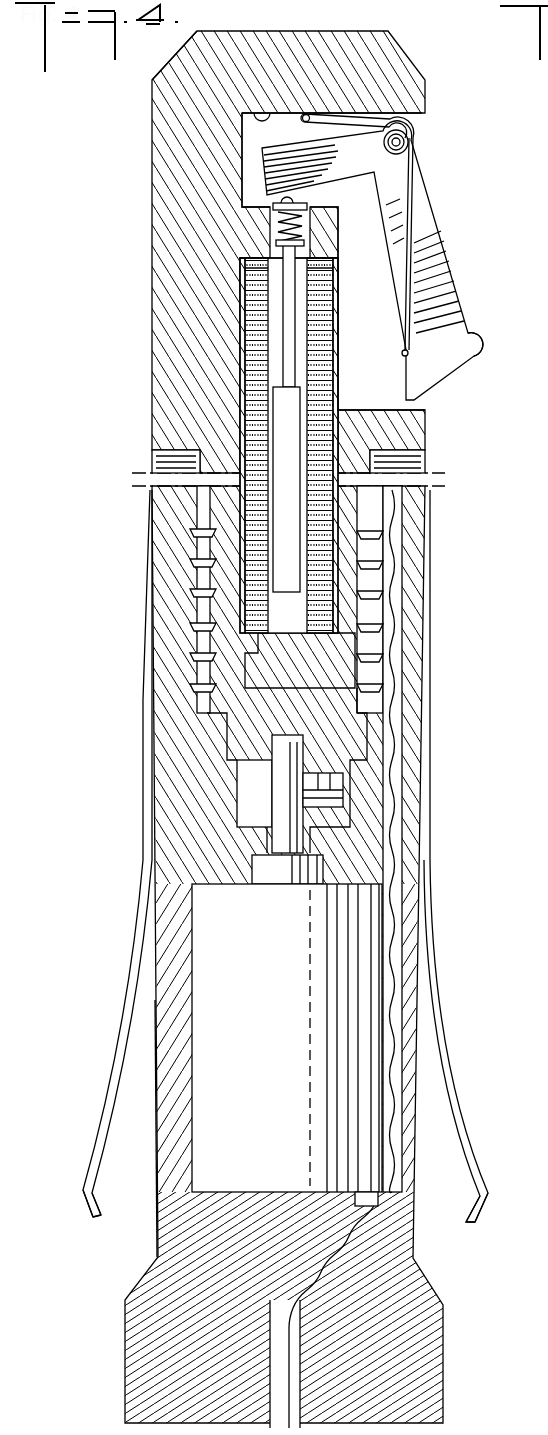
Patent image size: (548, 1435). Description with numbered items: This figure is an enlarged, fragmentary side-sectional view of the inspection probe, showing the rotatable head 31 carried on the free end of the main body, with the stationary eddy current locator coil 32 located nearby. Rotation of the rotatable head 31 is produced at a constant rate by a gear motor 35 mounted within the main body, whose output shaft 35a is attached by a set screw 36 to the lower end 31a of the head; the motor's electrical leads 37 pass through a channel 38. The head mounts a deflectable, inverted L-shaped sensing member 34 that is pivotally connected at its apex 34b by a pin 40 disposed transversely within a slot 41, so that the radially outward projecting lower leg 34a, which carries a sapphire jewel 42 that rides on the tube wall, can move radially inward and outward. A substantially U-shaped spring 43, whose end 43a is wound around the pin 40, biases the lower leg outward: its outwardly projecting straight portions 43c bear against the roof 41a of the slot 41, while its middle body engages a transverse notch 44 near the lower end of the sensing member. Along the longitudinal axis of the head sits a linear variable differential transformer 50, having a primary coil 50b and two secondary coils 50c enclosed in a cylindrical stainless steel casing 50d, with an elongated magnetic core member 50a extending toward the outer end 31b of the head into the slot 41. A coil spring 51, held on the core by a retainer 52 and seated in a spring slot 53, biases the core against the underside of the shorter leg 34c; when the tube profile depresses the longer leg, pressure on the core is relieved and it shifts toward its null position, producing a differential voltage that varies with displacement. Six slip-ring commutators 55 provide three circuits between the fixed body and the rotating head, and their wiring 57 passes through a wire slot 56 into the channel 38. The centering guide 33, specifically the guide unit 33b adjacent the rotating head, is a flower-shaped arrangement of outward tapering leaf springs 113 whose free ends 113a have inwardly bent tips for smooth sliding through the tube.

The rotatable head 31 is at (145, 405).
The lower end of the rotatable head 31a is at (338, 722).
The outer end of the rotatable head 31b is at (170, 60).
The eddy current locator coil 32 is at (153, 464).
The centering guide 33 is at (150, 1123).
The centering guide 33b is at (442, 968).
The sensing member 34 is at (474, 314).
The lower leg of the sensing member 34a is at (455, 323).
The apex of the sensing member 34b is at (432, 157).
The shorter leg of the sensing member 34c is at (265, 153).
The gear motor 35 is at (306, 981).
The output shaft 35a is at (277, 747).
The set screw 36 is at (328, 790).
The electrical leads 37 is at (328, 1245).
The channel 38 is at (275, 1330).
The pin 40 is at (400, 141).
The slot 41 is at (374, 307).
The roof of the slot 41a is at (266, 108).
The jewel 42 is at (480, 349).
The U-shaped spring 43 is at (412, 197).
The end of the spring 43a is at (414, 125).
The straight portions of the spring 43c is at (341, 108).
The transverse notch 44 is at (402, 357).
The linear variable differential transformer 50 is at (235, 320).
The magnetic core member 50a is at (283, 533).
The primary coil 50b is at (282, 397).
The secondary coils 50c is at (250, 347).
The cylindrical stainless steel casing 50d is at (240, 278).
The coil spring 51 is at (278, 222).
The retainer 52 is at (278, 203).
The spring slot 53 is at (276, 243).
The slip-ring commutators 55 is at (382, 535).
The wire slot 56 is at (398, 860).
The wiring 57 is at (394, 823).
The leaf springs 113 is at (136, 1022).
The free ends of the leaf springs 113a is at (90, 1213).